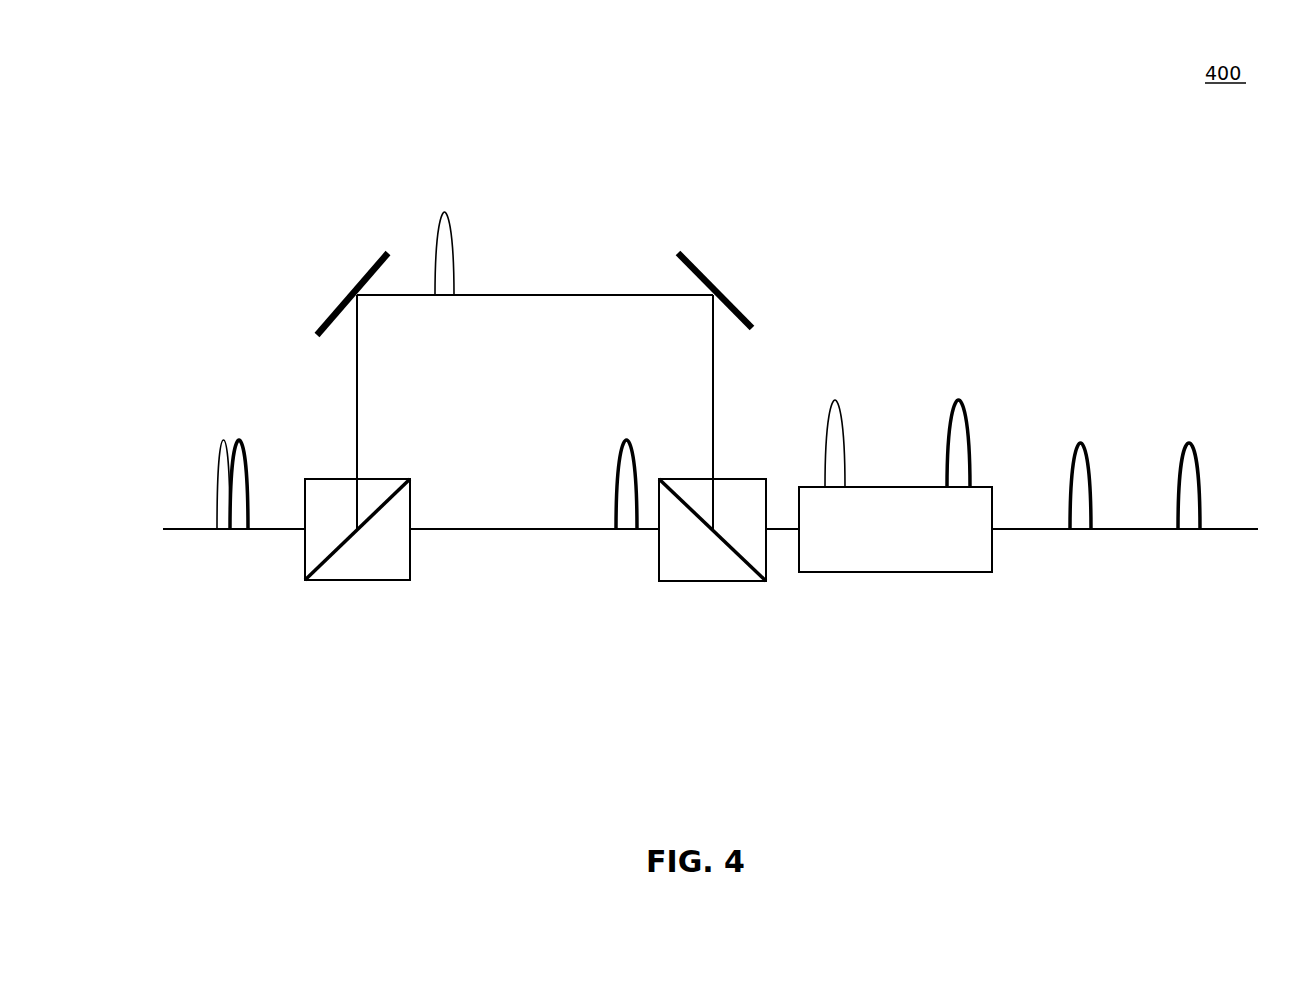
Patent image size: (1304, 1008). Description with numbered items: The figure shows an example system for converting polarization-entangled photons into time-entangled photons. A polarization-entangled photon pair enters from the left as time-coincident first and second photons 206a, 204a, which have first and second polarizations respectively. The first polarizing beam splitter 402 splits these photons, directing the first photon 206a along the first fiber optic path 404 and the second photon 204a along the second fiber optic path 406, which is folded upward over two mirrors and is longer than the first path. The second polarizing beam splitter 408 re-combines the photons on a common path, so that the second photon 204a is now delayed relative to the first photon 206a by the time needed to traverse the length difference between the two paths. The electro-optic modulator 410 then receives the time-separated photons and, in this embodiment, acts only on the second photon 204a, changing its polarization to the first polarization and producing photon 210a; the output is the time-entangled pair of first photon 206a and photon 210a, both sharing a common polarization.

The first polarizing beam splitter 402 is at (362, 582).
The first fiber optic path 404 is at (520, 531).
The second fiber optic path 406 is at (536, 294).
The second polarizing beam splitter 408 is at (717, 583).
The electro-optic modulator 410 is at (900, 574).
The second photon 204a is at (216, 478).
The first photon 206a is at (250, 468).
The time-shifted second photon 210a is at (1090, 460).